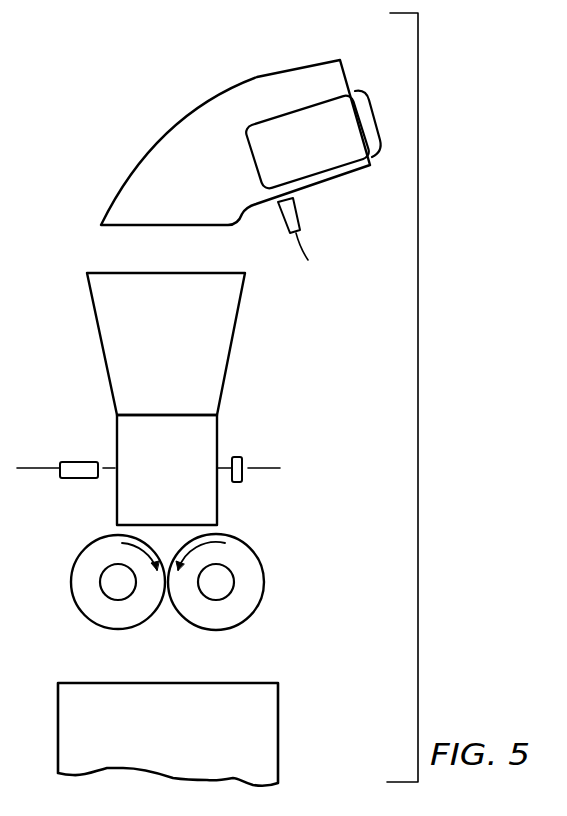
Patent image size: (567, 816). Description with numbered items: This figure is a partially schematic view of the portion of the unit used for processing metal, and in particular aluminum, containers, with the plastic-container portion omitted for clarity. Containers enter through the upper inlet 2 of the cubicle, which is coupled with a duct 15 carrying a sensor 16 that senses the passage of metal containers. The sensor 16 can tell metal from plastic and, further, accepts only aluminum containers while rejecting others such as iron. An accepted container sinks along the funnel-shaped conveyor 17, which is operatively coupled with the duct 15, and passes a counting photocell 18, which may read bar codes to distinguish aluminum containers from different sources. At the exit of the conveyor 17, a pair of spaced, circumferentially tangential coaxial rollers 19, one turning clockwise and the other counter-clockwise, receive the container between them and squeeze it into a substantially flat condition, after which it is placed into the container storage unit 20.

The upper inlet 2 is at (350, 77).
The duct 15 is at (257, 78).
The sensor 16 is at (297, 217).
The funnel-shaped conveyor 17 is at (103, 360).
The counting photocell 18 is at (80, 462).
The coaxial rollers 19 is at (247, 563).
The container storage unit 20 is at (240, 745).